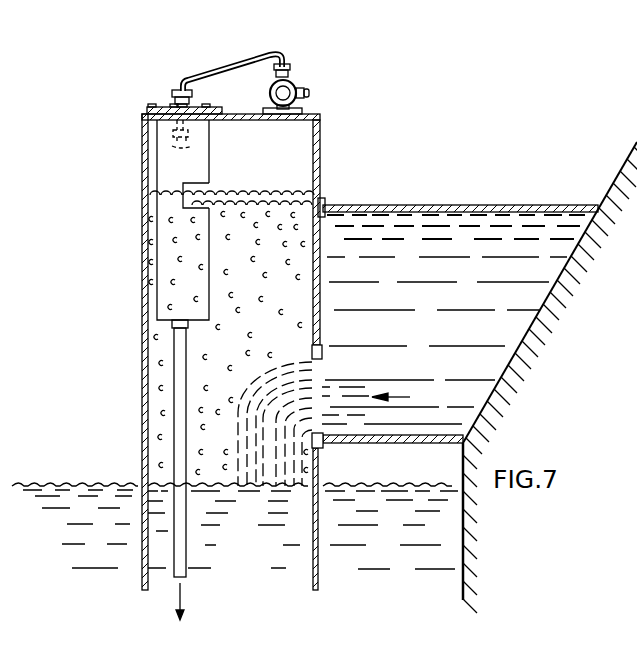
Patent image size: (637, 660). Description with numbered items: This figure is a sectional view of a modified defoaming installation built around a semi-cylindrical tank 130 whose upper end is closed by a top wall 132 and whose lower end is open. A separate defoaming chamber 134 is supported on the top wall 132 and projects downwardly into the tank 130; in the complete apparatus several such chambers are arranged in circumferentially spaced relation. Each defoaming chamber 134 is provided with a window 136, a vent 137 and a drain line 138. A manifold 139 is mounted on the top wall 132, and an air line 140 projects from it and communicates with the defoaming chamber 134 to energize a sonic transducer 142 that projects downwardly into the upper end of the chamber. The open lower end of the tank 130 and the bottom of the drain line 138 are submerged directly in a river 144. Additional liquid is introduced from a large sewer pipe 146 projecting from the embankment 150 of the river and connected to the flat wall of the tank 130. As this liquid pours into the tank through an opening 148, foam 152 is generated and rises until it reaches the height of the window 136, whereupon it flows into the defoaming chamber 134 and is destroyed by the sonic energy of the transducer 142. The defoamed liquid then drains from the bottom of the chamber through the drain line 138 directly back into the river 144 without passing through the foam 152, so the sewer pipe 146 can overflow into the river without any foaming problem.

The semi-cylindrical tank 130 is at (140, 270).
The top wall 132 is at (318, 114).
The separate defoaming chamber 134 is at (210, 137).
The window 136 is at (210, 187).
The vent 137 is at (163, 106).
The drain line 138 is at (186, 548).
The manifold 139 is at (296, 84).
The air line 140 is at (285, 50).
The sonic transducer 142 is at (172, 146).
The river 144 is at (81, 493).
The sewer pipe 146 is at (370, 204).
The opening 148 is at (320, 372).
The embankment 150 is at (633, 140).
The foam 152 is at (243, 353).